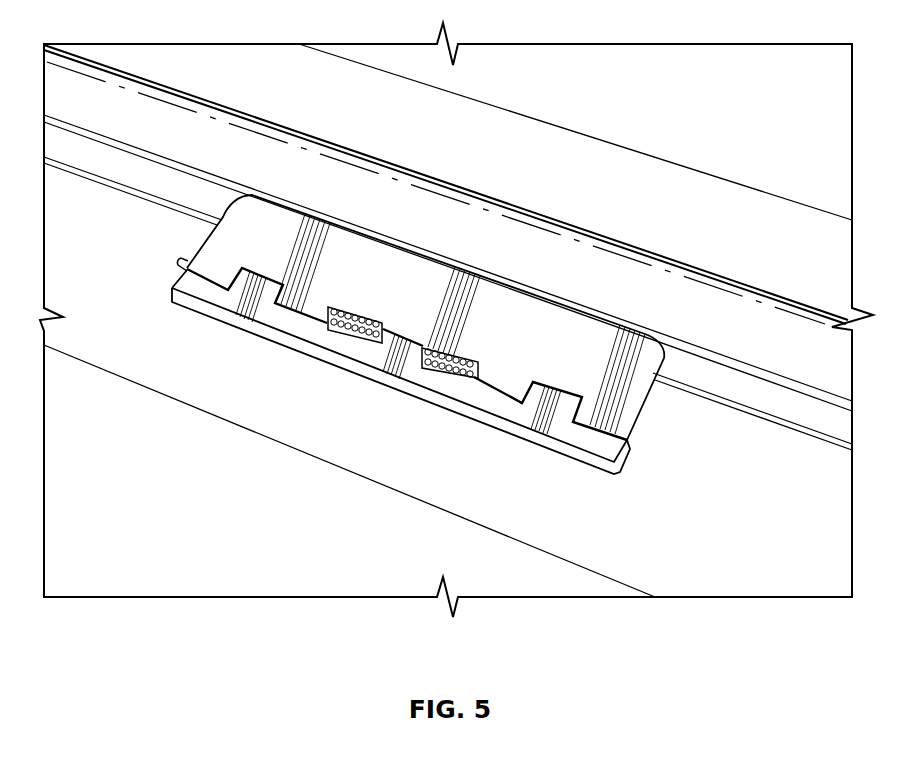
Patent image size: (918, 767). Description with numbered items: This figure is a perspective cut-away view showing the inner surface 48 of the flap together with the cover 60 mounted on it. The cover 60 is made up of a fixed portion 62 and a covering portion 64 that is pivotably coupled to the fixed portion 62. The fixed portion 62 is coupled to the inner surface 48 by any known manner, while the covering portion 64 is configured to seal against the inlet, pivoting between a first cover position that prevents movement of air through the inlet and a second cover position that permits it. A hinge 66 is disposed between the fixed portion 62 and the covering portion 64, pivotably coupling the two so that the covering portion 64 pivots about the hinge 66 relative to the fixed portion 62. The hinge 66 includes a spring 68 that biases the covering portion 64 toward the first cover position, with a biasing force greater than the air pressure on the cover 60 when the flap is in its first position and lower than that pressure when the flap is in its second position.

The inner surface 48 is at (372, 583).
The cover 60 is at (401, 337).
The fixed portion 62 is at (518, 412).
The covering portion 64 is at (585, 332).
The hinge 66 is at (208, 257).
The spring 68 is at (333, 318).